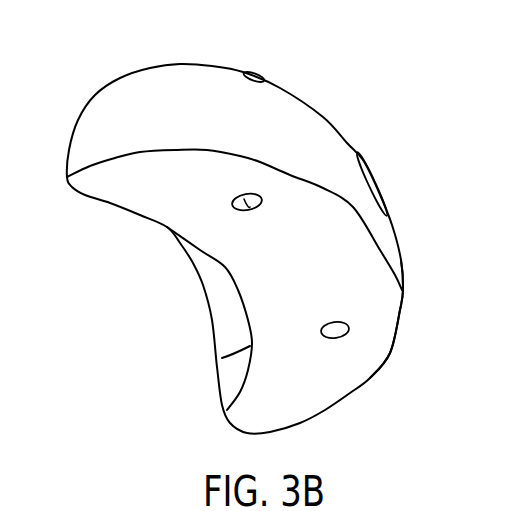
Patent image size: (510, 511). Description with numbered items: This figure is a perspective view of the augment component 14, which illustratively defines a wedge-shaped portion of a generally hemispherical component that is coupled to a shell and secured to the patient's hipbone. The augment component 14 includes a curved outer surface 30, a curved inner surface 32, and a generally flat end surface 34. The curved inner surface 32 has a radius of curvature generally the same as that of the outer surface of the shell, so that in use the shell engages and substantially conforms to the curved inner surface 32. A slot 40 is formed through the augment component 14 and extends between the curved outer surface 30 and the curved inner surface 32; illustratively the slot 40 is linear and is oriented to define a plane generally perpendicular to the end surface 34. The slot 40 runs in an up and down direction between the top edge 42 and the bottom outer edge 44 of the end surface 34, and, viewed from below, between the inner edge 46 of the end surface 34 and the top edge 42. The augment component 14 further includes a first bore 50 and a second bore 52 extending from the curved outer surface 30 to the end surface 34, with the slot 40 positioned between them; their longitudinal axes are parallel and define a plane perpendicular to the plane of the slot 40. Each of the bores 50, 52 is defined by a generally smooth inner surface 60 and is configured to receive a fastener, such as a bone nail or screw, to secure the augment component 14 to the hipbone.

The augment component 14 is at (392, 64).
The curved outer surface 30 is at (293, 118).
The curved inner surface 32 is at (222, 314).
The end surface 34 is at (377, 285).
The slot 40 is at (380, 179).
The top edge 42 is at (195, 265).
The bottom outer edge 44 is at (388, 353).
The inner edge 46 is at (222, 358).
The first bore 50 is at (334, 333).
The second bore 52 is at (253, 73).
The inner surface 60 is at (250, 207).